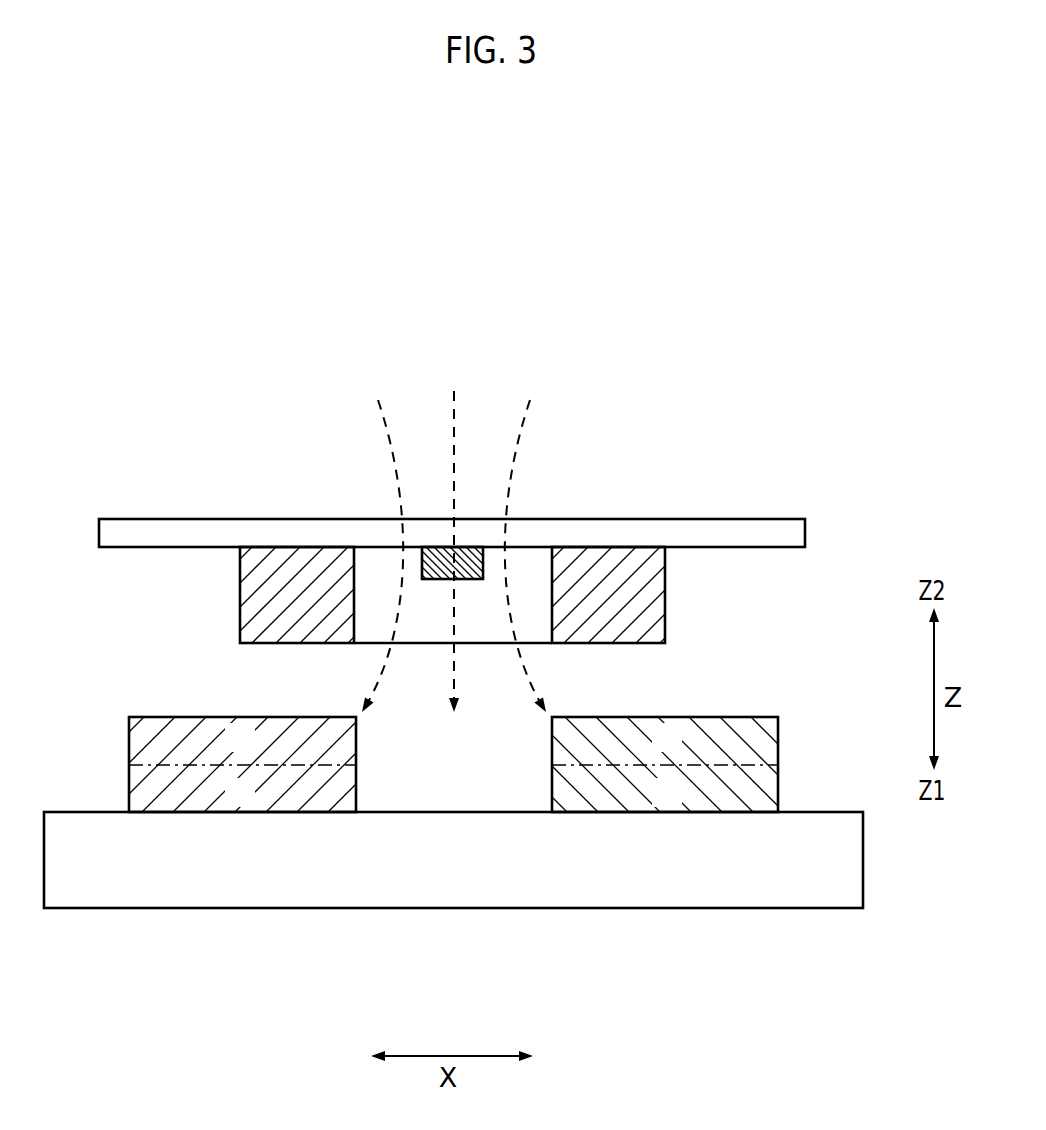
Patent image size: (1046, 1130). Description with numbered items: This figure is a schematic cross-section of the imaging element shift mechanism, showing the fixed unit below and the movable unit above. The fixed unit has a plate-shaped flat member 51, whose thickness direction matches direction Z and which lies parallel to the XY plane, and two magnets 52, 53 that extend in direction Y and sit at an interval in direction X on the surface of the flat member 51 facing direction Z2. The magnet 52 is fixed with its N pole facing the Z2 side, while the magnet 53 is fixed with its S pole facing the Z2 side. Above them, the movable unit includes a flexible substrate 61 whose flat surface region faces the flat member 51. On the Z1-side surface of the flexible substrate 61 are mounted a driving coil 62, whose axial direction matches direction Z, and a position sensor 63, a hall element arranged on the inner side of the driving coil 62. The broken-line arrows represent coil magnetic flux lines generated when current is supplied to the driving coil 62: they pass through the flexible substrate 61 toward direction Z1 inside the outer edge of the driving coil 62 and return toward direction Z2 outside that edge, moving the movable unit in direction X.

The flat member 51 is at (863, 858).
The magnet 52 is at (778, 763).
The magnet 53 is at (129, 765).
The flexible substrate 61 is at (805, 528).
The driving coil 62 is at (250, 557).
The position sensor 63 is at (460, 565).